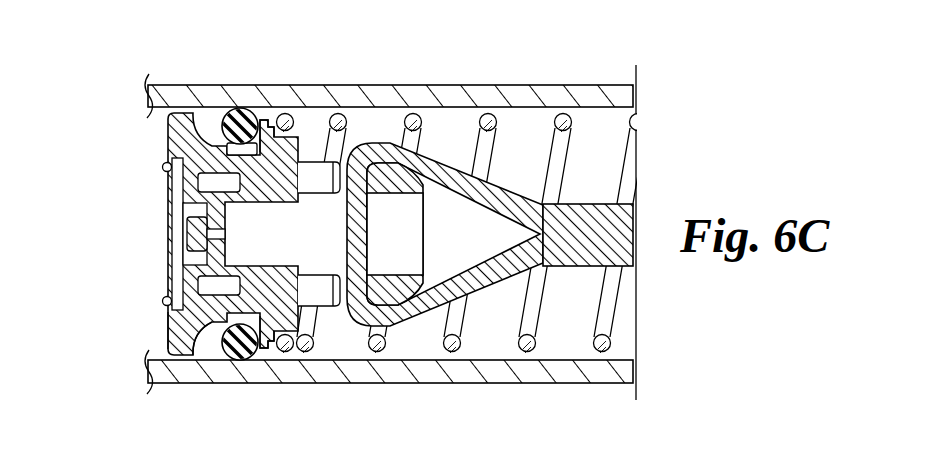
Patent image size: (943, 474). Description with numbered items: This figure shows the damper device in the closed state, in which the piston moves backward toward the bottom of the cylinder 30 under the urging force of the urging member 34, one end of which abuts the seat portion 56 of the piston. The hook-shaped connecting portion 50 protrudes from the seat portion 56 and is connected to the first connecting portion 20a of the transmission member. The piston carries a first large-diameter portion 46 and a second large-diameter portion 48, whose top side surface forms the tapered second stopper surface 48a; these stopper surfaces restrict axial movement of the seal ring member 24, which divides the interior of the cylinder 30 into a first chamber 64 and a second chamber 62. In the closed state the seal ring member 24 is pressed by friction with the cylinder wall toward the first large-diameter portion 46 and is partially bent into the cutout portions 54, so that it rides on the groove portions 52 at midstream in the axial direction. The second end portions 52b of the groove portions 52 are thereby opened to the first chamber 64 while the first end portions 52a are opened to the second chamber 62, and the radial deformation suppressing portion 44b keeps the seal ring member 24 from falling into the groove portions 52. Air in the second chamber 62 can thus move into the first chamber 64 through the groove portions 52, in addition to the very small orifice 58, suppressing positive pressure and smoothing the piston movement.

The first connecting portion 20a is at (382, 143).
The seal ring member 24 is at (240, 350).
The cylinder 30 is at (558, 84).
The urging member 34 is at (457, 125).
The radial deformation suppressing portion 44b is at (220, 150).
The first large-diameter portion 46 is at (271, 122).
The second large-diameter portion 48 is at (178, 357).
The second stopper surface 48a is at (200, 345).
The connecting portion 50 is at (401, 300).
The groove portions 52 is at (168, 156).
The first end portions 52a is at (170, 319).
The second end portions 52b is at (330, 323).
The cutout portions 54 is at (166, 302).
The seat portion 56 is at (272, 344).
The orifice 58 is at (195, 231).
The second chamber 62 is at (117, 130).
The first chamber 64 is at (590, 128).